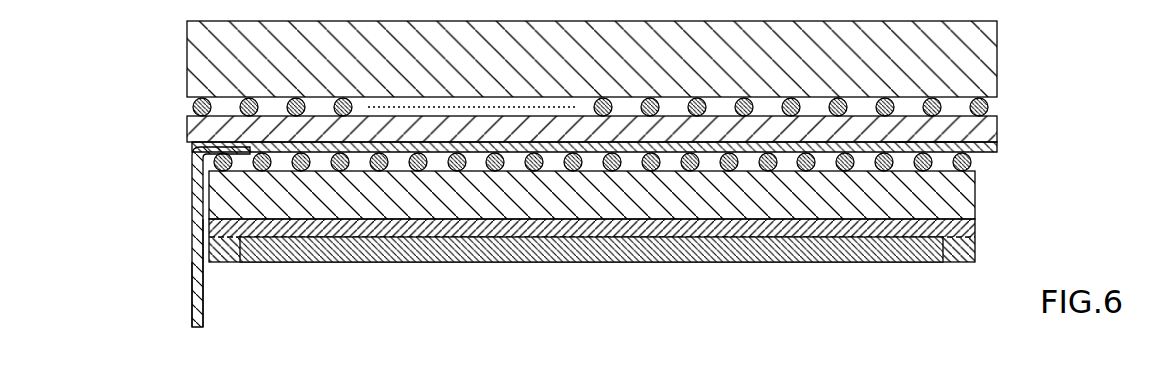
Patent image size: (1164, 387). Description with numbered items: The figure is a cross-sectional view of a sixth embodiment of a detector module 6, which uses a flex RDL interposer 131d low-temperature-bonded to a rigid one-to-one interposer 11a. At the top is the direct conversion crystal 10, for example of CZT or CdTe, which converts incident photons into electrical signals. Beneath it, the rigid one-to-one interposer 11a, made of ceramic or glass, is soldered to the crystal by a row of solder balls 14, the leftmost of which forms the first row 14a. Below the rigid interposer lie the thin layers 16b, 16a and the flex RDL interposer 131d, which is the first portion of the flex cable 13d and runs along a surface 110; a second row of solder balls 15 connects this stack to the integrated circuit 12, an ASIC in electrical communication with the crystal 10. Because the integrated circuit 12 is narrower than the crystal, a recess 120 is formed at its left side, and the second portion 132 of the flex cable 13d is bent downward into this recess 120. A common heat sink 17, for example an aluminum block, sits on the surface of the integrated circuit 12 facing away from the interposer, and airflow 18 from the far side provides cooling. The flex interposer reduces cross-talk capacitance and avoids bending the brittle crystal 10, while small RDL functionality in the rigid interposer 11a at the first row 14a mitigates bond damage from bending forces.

The detector module 6 is at (177, 40).
The direct conversion crystal 10 is at (997, 62).
The solder balls 14 is at (587, 107).
The first row of solder balls 14a is at (193, 107).
The rigid 1-to-1 interposer 11a is at (626, 103).
The first electrode layer 16a is at (940, 128).
The second electrode layer 16b is at (907, 146).
The solder balls 15 is at (971, 160).
The integrated circuit 12 is at (975, 192).
The common heat sink 17 is at (632, 266).
The airflow 18 is at (324, 256).
The flex RDL interposer 131d is at (440, 144).
The surface of the interposer 110 is at (511, 144).
The flex cable 13d is at (183, 245).
The second portion of the flex cable 132 is at (192, 272).
The recess 120 is at (207, 270).